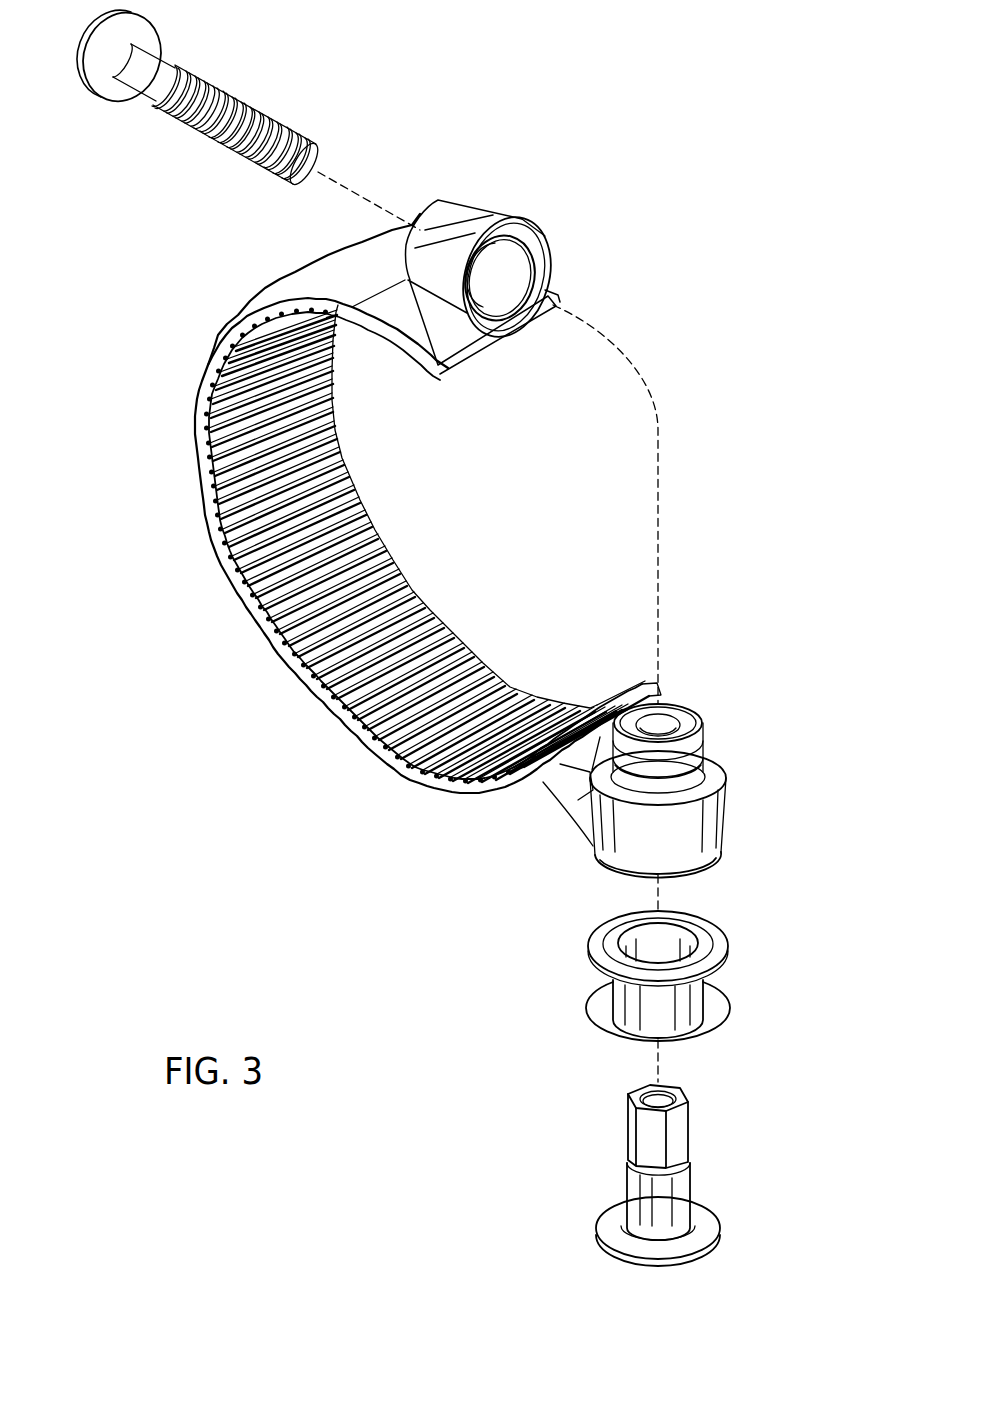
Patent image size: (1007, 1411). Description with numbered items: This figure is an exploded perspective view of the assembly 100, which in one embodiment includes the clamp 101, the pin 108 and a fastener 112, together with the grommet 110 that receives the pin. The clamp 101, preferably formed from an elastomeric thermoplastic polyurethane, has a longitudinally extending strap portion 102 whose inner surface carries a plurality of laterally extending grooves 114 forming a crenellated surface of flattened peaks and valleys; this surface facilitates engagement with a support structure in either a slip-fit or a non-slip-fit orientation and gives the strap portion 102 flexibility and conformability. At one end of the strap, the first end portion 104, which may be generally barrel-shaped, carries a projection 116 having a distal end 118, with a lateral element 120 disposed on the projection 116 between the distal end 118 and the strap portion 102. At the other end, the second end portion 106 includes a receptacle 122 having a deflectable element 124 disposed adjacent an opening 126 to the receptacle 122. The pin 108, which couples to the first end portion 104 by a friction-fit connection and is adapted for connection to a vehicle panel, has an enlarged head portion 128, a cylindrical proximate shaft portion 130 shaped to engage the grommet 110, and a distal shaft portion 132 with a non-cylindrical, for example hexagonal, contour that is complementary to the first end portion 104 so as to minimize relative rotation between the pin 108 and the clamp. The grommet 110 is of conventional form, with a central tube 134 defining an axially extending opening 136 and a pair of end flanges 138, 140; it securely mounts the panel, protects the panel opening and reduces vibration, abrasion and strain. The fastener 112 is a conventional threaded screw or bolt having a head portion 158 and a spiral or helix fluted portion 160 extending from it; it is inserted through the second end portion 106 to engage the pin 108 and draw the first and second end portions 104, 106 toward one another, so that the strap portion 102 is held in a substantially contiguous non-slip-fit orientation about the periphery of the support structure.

The assembly 100 is at (752, 484).
The clamp 101 is at (497, 527).
The strap portion 102 is at (274, 660).
The first end portion 104 is at (694, 768).
The second end portion 106 is at (510, 288).
The pin 108 is at (688, 1195).
The grommet 110 is at (672, 964).
The fastener 112 is at (181, 95).
The grooves 114 is at (447, 632).
The projection 116 is at (702, 710).
The distal end 118 is at (668, 710).
The lateral element 120 is at (714, 738).
The receptacle 122 is at (518, 346).
The deflectable element 124 is at (542, 270).
The opening 126 is at (522, 234).
The enlarged head portion 128 is at (715, 1220).
The proximate shaft portion 130 is at (687, 1180).
The distal shaft portion 132 is at (683, 1118).
The central tube 134 is at (612, 997).
The axially extending opening 136 is at (677, 936).
The end flange 138 is at (603, 940).
The end flange 140 is at (720, 1008).
The head portion 158 is at (96, 47).
The fluted portion 160 is at (217, 142).